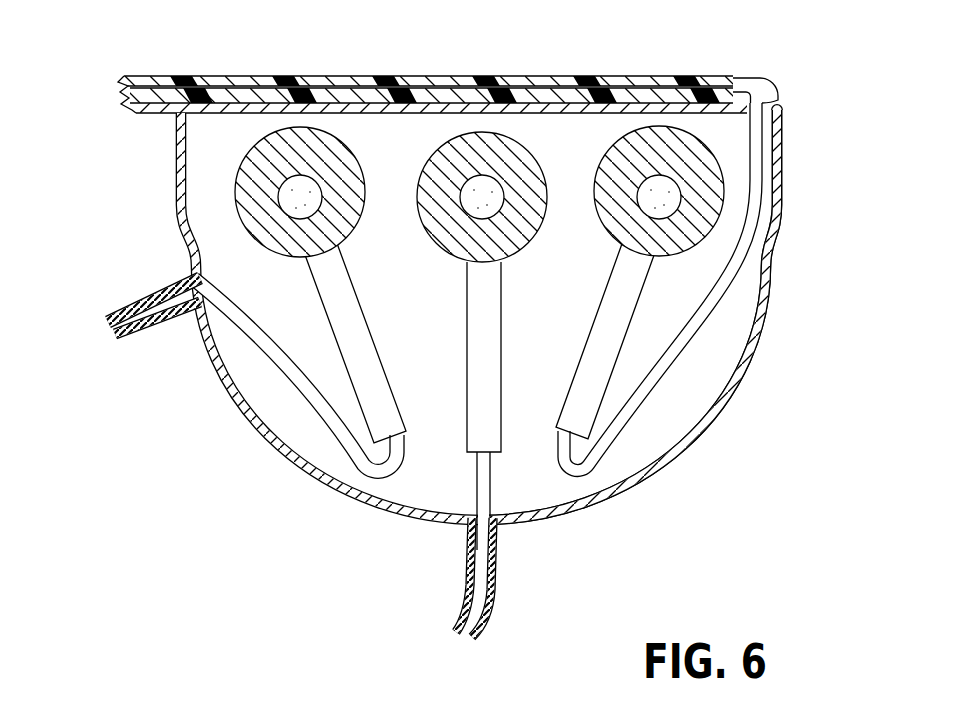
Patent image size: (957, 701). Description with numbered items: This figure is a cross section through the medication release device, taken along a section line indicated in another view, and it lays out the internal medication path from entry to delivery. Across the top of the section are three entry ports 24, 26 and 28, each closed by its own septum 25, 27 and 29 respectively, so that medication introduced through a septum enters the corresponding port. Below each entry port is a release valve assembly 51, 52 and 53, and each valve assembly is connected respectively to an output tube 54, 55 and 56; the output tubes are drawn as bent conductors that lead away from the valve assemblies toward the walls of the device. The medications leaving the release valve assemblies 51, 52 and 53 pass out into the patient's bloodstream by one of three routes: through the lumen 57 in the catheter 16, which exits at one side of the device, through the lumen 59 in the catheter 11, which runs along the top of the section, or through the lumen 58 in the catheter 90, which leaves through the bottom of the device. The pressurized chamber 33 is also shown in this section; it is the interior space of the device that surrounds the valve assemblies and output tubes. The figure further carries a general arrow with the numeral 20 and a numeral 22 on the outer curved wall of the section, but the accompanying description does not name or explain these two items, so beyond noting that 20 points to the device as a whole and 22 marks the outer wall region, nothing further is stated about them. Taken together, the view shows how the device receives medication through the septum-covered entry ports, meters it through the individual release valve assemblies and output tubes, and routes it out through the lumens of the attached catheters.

The catheter 11 is at (203, 77).
The lumen 59 is at (400, 77).
The pressurized chamber 33 is at (197, 181).
The housing shell 22 is at (762, 328).
The connector assembly 20 is at (440, 334).
The entry port 24 is at (298, 189).
The septum 25 is at (306, 192).
The entry port 26 is at (485, 214).
The septum 27 is at (487, 185).
The entry port 28 is at (635, 200).
The septum 29 is at (674, 196).
The release valve assembly 51 is at (332, 328).
The release valve assembly 52 is at (465, 383).
The release valve assembly 53 is at (565, 378).
The output tube 54 is at (246, 326).
The output tube 55 is at (477, 497).
The output tube 56 is at (692, 322).
The lumen 57 is at (118, 330).
The catheter 16 is at (142, 330).
The lumen 58 is at (466, 636).
The catheter 90 is at (492, 613).